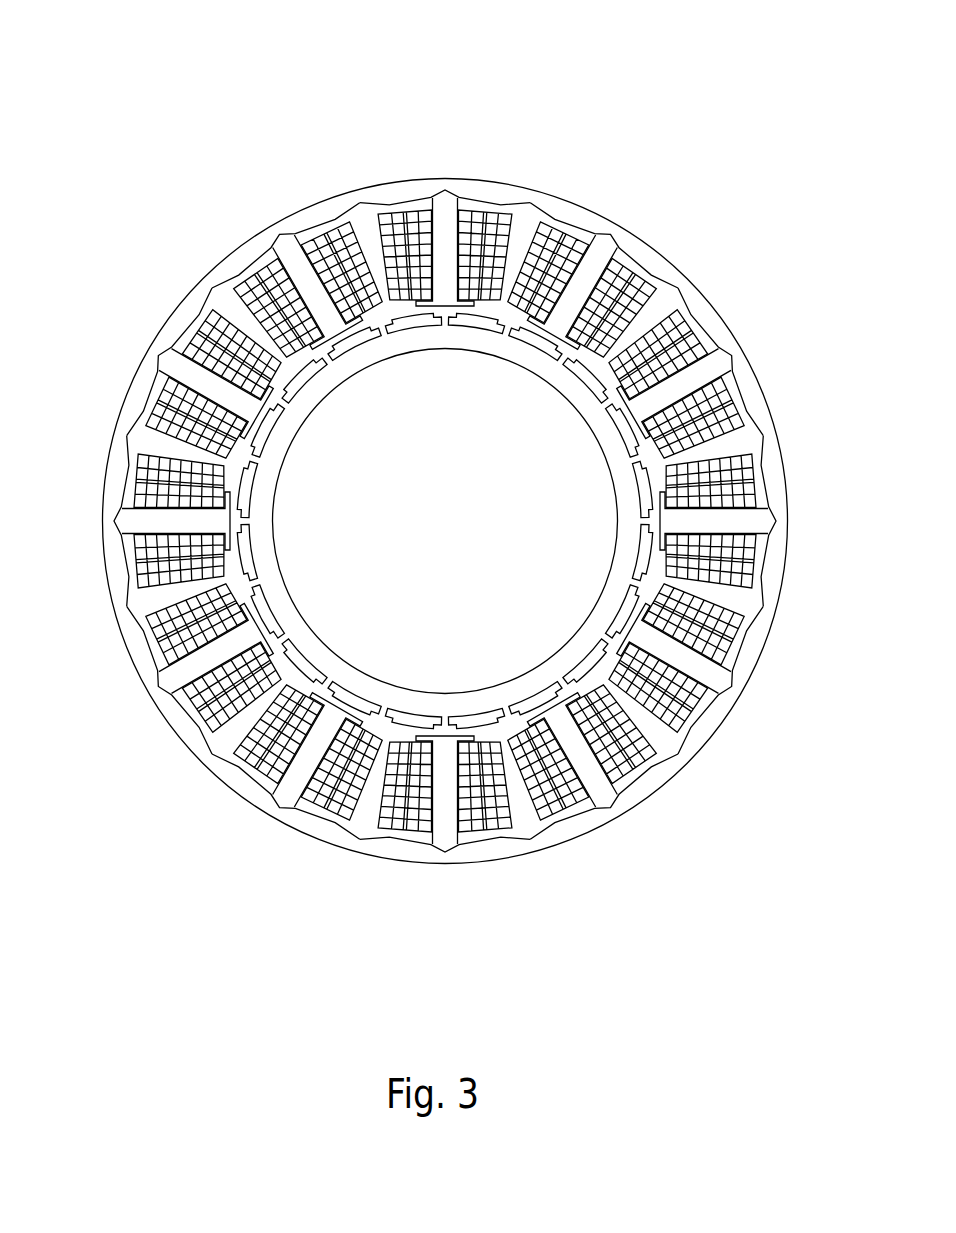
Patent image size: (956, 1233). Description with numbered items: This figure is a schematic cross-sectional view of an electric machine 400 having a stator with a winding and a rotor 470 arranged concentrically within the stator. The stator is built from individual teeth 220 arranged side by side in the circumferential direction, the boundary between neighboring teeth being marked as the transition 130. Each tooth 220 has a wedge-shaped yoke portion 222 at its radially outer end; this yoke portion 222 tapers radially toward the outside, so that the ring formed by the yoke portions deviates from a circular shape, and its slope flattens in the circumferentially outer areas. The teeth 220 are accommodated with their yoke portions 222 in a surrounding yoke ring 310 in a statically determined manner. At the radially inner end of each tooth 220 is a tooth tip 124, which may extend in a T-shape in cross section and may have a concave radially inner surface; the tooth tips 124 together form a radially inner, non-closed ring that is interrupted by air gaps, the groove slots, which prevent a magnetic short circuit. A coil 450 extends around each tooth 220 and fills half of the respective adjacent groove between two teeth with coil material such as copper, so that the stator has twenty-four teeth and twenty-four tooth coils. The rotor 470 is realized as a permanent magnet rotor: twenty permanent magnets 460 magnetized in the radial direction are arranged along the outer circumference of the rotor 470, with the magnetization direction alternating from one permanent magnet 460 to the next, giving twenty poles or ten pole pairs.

The electric machine 400 is at (434, 449).
The transition 130 is at (327, 240).
The tooth 220 is at (418, 232).
The coil 450 is at (560, 250).
The yoke ring 310 is at (648, 246).
The wedge-shaped yoke portion 222 is at (158, 378).
The rotor 470 is at (510, 358).
The tooth tip 124 is at (630, 633).
The permanent magnet 460 is at (573, 677).